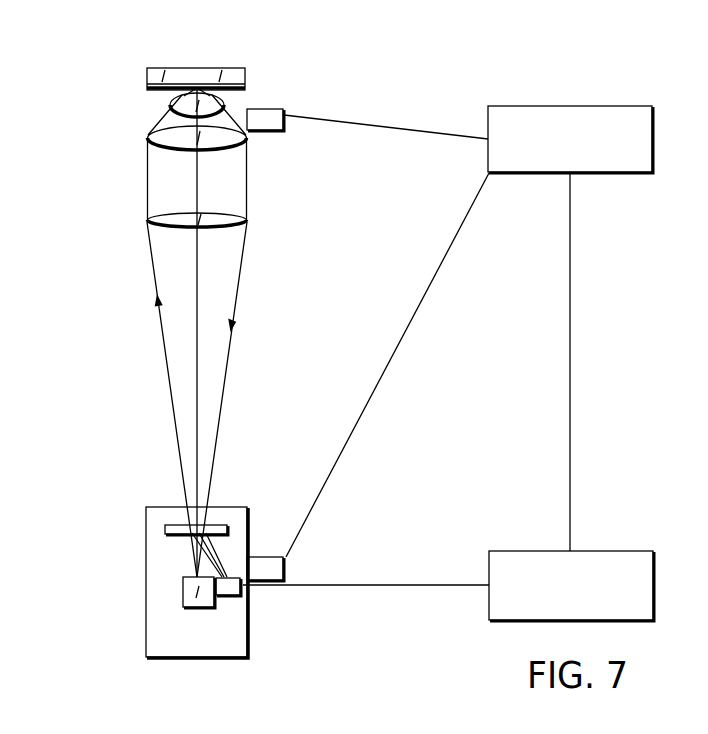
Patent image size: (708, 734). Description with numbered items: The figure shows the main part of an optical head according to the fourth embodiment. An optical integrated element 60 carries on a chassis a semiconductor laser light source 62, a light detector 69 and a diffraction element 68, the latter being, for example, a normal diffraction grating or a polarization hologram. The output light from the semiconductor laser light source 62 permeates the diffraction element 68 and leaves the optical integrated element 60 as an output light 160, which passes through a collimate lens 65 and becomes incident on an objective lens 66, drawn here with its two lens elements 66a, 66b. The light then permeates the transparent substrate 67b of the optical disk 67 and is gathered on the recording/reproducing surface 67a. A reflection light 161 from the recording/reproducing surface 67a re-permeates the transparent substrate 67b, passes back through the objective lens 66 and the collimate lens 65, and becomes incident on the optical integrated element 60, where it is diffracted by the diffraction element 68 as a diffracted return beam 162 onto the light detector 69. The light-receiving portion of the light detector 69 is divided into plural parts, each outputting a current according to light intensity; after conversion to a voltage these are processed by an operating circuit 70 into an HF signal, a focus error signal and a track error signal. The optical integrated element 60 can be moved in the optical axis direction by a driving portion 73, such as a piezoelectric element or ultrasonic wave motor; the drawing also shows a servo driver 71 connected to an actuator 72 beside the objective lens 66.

The optical integrated element 60 is at (146, 532).
The semiconductor laser light source 62 is at (183, 596).
The collimate lens 65 is at (147, 221).
The objective lens 66 is at (137, 122).
The first objective lens element 66a is at (148, 138).
The second objective lens element 66b is at (170, 106).
The optical disk 67 is at (180, 67).
The recording/reproducing surface 67a is at (147, 70).
The transparent substrate 67b is at (147, 86).
The diffraction element 68 is at (219, 525).
The light detector 69 is at (233, 596).
The operating circuit 70 is at (519, 551).
The servo driver 71 is at (516, 106).
The lens actuator 72 is at (283, 109).
The driving portion 73 is at (283, 565).
The output light 160 is at (183, 483).
The reflection light 161 is at (223, 398).
The return light beam 162 is at (213, 552).